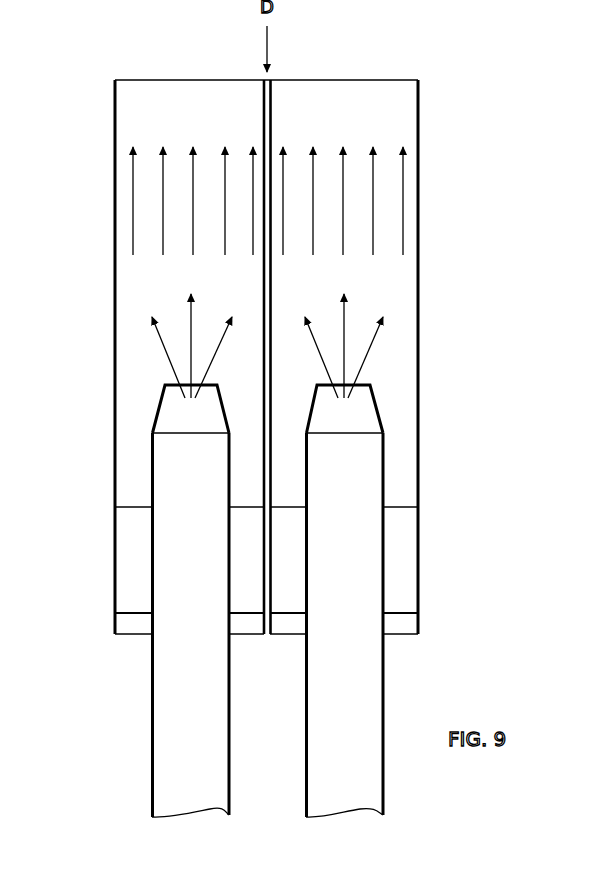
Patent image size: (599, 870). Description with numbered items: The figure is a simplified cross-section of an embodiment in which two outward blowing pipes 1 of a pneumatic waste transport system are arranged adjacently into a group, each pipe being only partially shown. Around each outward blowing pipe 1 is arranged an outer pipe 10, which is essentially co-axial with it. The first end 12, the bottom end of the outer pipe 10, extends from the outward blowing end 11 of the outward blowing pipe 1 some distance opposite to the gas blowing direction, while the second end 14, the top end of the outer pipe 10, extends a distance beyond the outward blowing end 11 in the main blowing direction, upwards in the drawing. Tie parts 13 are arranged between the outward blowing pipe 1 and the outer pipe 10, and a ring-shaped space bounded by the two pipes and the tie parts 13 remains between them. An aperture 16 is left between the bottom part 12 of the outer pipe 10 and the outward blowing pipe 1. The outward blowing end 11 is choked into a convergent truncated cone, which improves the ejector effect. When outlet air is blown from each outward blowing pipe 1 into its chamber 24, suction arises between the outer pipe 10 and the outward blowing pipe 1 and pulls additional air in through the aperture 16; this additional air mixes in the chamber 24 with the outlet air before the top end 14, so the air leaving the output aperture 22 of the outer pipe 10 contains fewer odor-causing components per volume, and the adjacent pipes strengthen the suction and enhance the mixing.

The outward blowing pipe 1 is at (152, 710).
The outer pipe 10 is at (115, 320).
The outward blowing end 11 is at (165, 386).
The first end 12 is at (115, 634).
The tie parts 13 is at (128, 572).
The second end 14 is at (115, 80).
The aperture 16 is at (133, 622).
The output aperture 22 is at (133, 103).
The chamber 24 is at (176, 293).